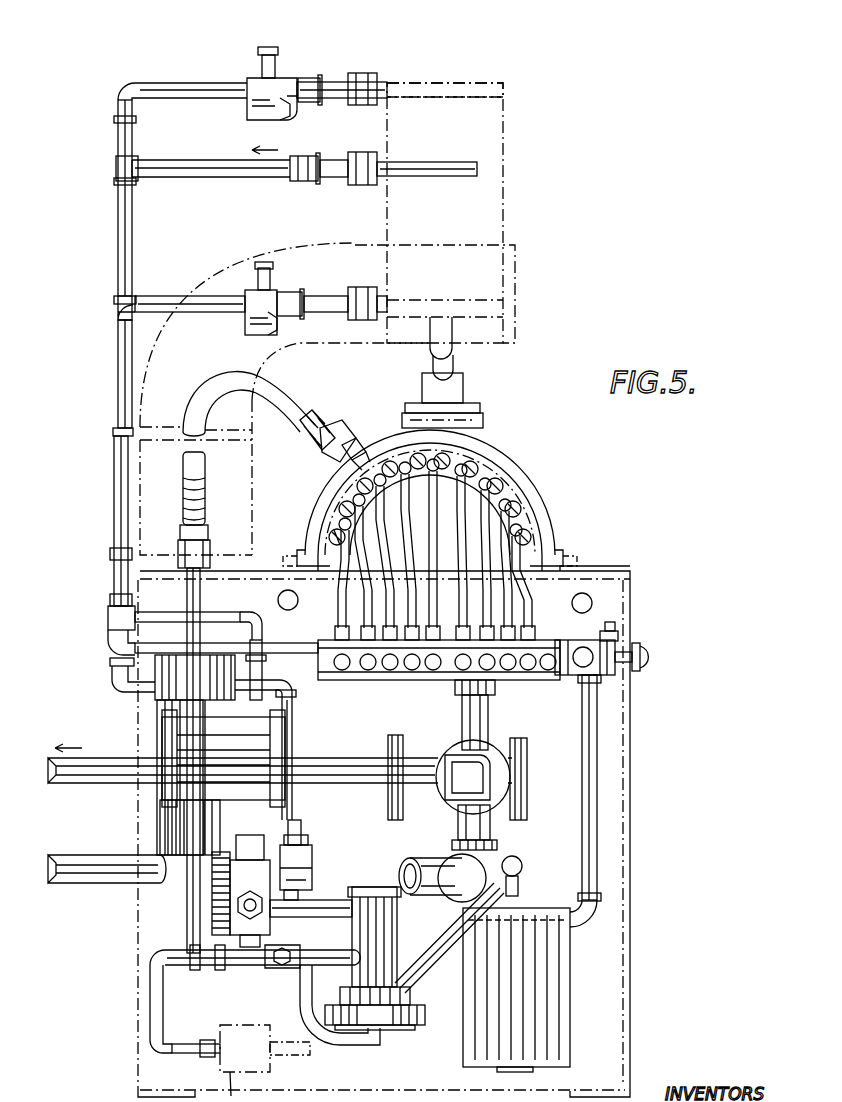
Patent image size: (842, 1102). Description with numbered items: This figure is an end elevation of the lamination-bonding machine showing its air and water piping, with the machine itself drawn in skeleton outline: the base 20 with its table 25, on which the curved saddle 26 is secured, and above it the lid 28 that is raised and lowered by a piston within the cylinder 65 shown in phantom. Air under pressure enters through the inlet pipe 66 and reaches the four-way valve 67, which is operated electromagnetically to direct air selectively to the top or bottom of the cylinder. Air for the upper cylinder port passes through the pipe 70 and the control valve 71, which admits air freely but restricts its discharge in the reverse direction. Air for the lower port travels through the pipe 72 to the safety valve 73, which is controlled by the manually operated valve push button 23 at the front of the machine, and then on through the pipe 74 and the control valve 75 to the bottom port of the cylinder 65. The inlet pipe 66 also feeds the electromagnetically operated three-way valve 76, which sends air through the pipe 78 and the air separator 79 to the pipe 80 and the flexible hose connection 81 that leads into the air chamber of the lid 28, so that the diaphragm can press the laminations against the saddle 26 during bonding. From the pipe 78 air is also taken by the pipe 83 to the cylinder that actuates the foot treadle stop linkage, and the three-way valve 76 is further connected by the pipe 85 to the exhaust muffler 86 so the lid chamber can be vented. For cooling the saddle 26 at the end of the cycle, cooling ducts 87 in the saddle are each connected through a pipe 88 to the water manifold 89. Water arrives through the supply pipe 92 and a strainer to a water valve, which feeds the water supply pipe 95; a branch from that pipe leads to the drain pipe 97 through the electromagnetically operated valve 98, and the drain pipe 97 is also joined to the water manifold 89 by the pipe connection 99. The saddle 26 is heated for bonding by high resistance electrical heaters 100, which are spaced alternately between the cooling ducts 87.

The base 20 is at (630, 916).
The manually operated valve push button 23 is at (635, 648).
The table 25 is at (600, 573).
The curved saddle 26 is at (577, 568).
The lid 28 is at (505, 425).
The cylinder 65 is at (504, 224).
The pipe 66 is at (230, 175).
The four-way valve 67 is at (215, 897).
The pipe 70 is at (118, 133).
The control valve 71 is at (278, 80).
The pipe 72 is at (598, 815).
The safety valve 73 is at (588, 640).
The pipe 74 is at (116, 522).
The control valve 75 is at (277, 284).
The three-way valve 76 is at (398, 1012).
The pipe 78 is at (196, 812).
The air separator 79 is at (160, 706).
The pipe 80 is at (203, 600).
The flexible hose connection 81 is at (219, 388).
The pipe 83 is at (156, 992).
The pipe 85 is at (440, 960).
The exhaust muffler 86 is at (571, 984).
The cooling ducts 87 is at (507, 472).
The pipe 88 is at (494, 506).
The water manifold 89 is at (520, 678).
The supply pipe 92 is at (76, 884).
The water supply pipe 95 is at (422, 862).
The drain pipe 97 is at (78, 786).
The valve 98 is at (516, 785).
The pipe connection 99 is at (480, 722).
The high resistance electrical heaters 100 is at (531, 553).